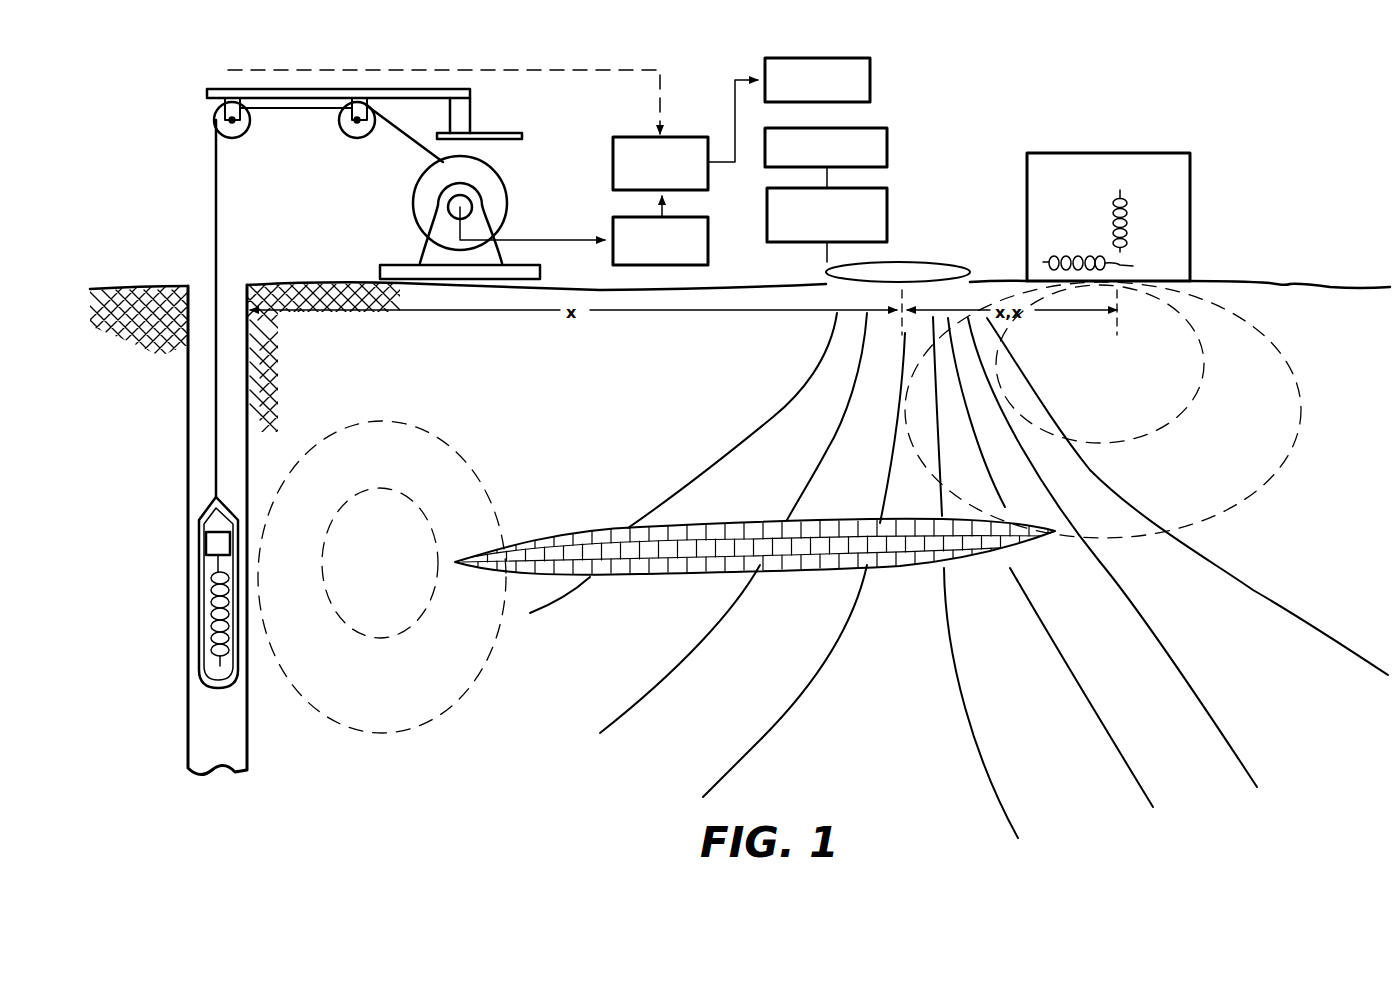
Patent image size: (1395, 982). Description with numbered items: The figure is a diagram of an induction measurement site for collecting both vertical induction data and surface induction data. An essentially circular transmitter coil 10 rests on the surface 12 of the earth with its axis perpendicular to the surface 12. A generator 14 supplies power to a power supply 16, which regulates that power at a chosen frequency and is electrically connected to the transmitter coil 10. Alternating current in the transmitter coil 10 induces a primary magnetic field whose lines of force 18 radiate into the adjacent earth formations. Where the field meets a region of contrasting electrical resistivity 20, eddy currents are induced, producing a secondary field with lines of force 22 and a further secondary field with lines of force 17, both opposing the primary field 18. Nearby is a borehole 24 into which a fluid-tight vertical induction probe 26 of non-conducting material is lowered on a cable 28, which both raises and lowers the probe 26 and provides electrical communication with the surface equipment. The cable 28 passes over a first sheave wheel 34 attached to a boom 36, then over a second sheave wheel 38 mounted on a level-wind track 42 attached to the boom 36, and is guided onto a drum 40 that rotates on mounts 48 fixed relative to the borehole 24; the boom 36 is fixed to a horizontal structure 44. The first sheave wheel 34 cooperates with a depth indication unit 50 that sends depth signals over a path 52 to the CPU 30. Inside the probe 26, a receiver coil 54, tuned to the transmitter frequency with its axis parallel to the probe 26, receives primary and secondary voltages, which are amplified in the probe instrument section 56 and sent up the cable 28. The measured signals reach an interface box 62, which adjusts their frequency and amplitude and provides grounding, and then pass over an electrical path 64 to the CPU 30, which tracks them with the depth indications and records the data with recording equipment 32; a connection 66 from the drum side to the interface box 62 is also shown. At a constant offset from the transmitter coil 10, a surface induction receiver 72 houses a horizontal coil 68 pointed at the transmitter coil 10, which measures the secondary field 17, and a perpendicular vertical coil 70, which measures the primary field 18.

The transmitter coil 10 is at (940, 267).
The surface of the earth 12 is at (145, 283).
The generator 14 is at (887, 141).
The power supply 16 is at (888, 201).
The secondary magnetic field lines of force 17 is at (1279, 420).
The primary magnetic field lines of force 18 is at (768, 478).
The region of contrasting electrical resistivity 20 is at (622, 568).
The secondary magnetic field lines of force 22 is at (438, 520).
The borehole 24 is at (186, 430).
The vertical induction probe 26 is at (197, 644).
The cable 28 is at (216, 217).
The CPU 30 is at (633, 138).
The data recording equipment 32 is at (838, 62).
The first sheave wheel 34 is at (236, 138).
The boom 36 is at (413, 90).
The second sheave wheel 38 is at (350, 137).
The drum 40 is at (447, 206).
The level-wind track 42 is at (357, 85).
The horizontal structure 44 is at (493, 133).
The mounts 48 is at (483, 255).
The depth indication unit 50 is at (218, 112).
The path 52 is at (272, 69).
The receiver coil 54 is at (211, 613).
The probe instrument section 56 is at (206, 538).
The interface box 62 is at (708, 243).
The electrical path 64 is at (667, 210).
The winch-to-interface connection 66 is at (524, 240).
The horizontal coil 68 is at (1120, 265).
The vertical coil 70 is at (1128, 203).
The surface induction receiver 72 is at (1163, 154).